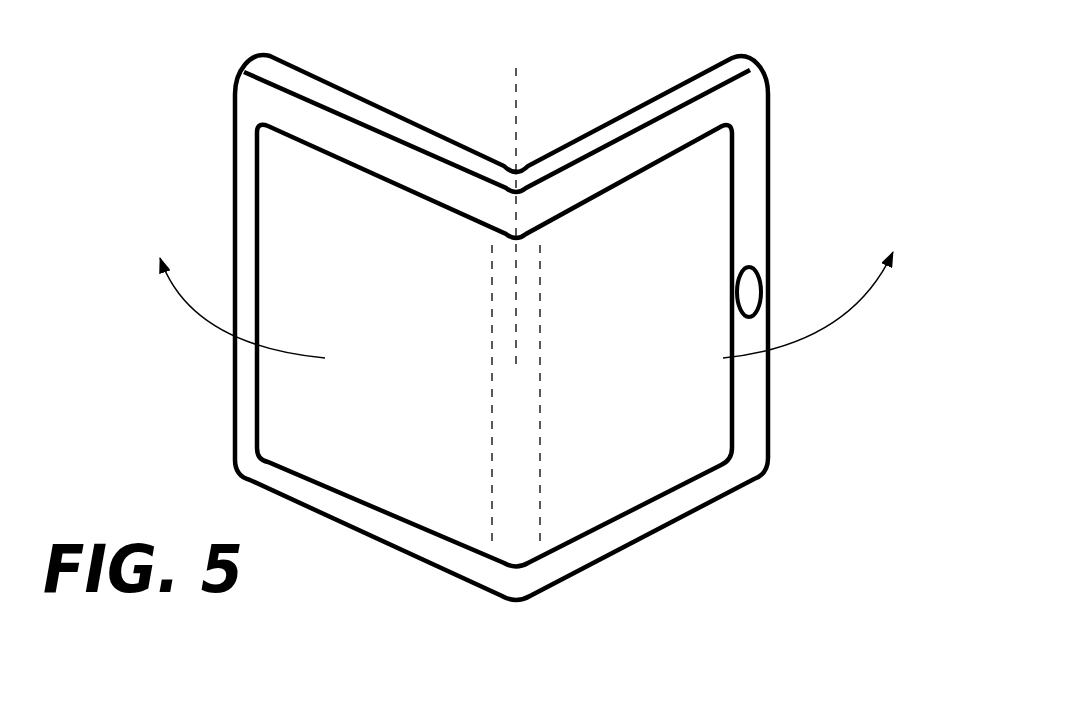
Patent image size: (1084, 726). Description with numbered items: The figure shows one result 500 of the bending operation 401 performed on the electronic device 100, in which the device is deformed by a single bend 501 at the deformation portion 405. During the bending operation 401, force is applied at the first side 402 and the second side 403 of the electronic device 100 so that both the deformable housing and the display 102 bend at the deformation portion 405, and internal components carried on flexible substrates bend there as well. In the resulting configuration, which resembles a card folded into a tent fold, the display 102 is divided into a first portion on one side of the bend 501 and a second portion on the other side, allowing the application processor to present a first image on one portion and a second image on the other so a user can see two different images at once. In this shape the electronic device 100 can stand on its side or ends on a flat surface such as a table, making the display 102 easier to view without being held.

The electronic device 100 is at (180, 388).
The display 102 is at (642, 465).
The bending operation 401 is at (847, 325).
The first side 402 is at (222, 167).
The second side 403 is at (782, 208).
The deformation portion 405 is at (542, 310).
The result of the bending operation 500 is at (846, 98).
The bend 501 is at (517, 128).